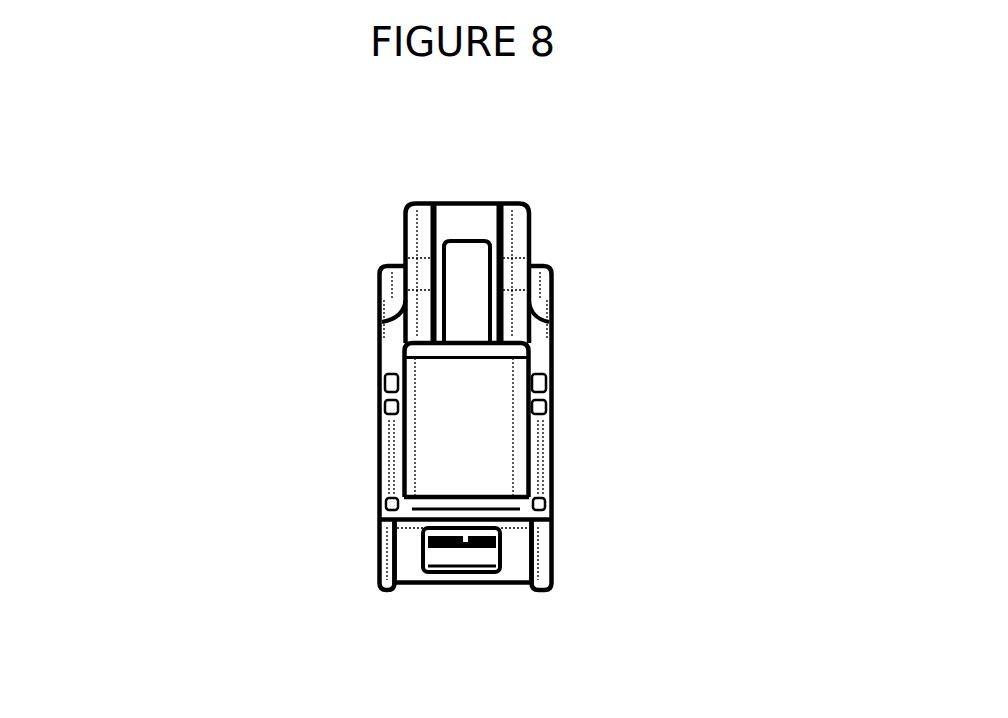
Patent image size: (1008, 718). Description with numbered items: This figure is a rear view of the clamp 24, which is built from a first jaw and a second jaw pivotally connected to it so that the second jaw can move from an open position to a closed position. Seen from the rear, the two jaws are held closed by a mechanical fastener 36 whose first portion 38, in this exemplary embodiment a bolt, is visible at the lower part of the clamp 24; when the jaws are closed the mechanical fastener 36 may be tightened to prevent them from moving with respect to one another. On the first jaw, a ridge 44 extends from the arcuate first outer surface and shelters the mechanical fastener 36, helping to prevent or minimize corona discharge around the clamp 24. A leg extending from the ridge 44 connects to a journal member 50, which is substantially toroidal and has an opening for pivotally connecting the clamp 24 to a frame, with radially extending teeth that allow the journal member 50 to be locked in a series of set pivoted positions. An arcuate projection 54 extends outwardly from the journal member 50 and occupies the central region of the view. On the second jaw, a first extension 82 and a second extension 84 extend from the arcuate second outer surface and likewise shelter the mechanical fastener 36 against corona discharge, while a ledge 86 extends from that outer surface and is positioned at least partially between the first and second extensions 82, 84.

The clamp 24 is at (177, 342).
The mechanical fastener 36 is at (472, 320).
The first portion 38 is at (493, 568).
The ridge 44 is at (412, 263).
The journal member 50 is at (540, 412).
The arcuate projection 54 is at (432, 453).
The first extension 82 is at (553, 573).
The second extension 84 is at (386, 543).
The ledge 86 is at (550, 506).